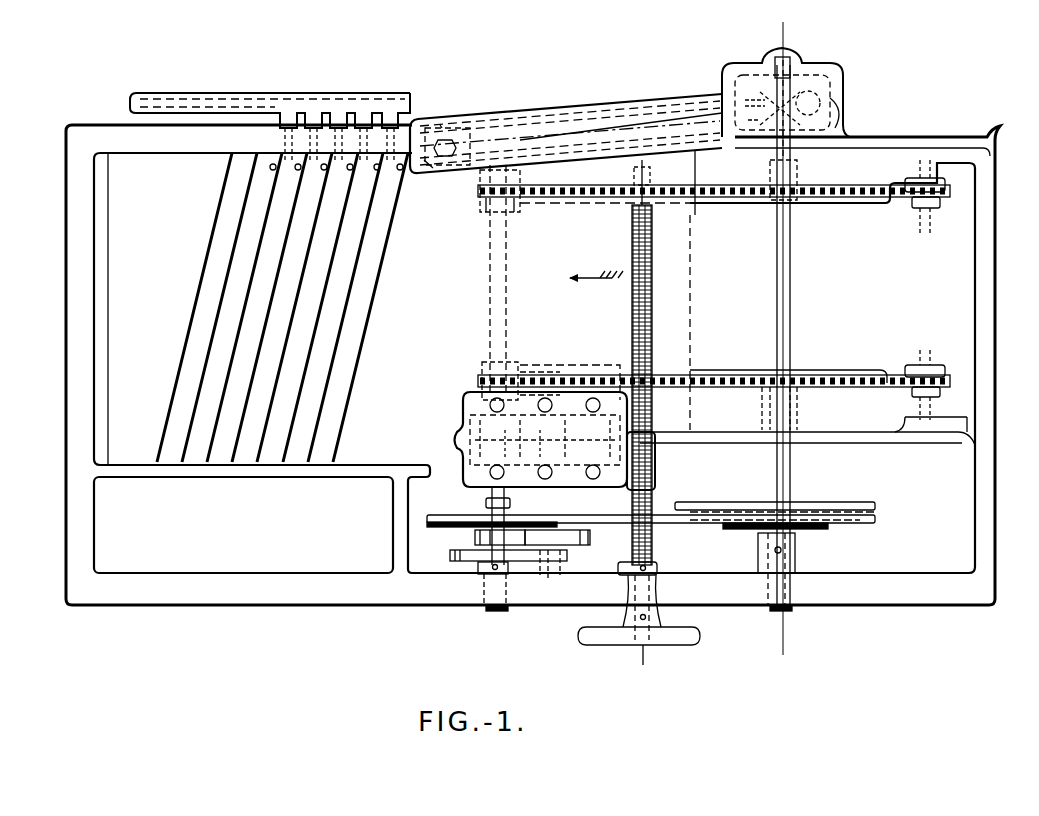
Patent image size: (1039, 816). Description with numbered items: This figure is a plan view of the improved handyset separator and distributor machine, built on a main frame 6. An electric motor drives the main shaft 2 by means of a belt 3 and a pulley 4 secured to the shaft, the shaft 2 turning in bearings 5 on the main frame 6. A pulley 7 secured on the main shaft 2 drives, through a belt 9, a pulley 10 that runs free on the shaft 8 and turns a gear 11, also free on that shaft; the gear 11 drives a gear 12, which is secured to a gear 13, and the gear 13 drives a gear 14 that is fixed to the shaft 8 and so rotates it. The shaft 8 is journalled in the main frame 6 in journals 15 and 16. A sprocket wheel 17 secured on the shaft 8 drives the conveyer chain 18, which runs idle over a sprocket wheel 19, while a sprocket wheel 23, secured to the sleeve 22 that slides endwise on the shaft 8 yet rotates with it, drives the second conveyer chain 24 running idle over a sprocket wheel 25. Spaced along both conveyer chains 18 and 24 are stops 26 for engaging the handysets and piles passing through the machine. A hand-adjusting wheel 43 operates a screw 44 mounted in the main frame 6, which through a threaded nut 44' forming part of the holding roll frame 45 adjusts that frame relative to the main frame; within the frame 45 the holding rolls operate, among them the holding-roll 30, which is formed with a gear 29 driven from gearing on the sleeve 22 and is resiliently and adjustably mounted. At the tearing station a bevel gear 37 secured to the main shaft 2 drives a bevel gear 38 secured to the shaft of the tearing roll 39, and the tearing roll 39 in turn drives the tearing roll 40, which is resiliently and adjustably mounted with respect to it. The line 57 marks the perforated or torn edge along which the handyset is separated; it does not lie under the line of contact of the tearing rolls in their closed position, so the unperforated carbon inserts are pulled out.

The main shaft 2 is at (791, 464).
The belt 3 is at (877, 506).
The pulley 4 is at (855, 520).
The bearings 5 is at (458, 75).
The main frame 6 is at (845, 90).
The pulley 7 is at (830, 530).
The shaft 8 is at (497, 305).
The belt 9 is at (405, 167).
The pulley 10 is at (435, 525).
The gear 11 is at (478, 537).
The gear 12 is at (585, 535).
The gear 13 is at (570, 556).
The gear 14 is at (452, 557).
The journal 15 is at (478, 582).
The journal 16 is at (510, 181).
The sprocket wheel 17 is at (482, 198).
The conveyer chain 18 is at (758, 185).
The sprocket wheel 19 is at (935, 205).
The sleeve 22 is at (490, 368).
The sprocket wheel 23 is at (506, 383).
The conveyer chain 24 is at (760, 387).
The sprocket wheel 25 is at (940, 378).
The stops 26 is at (703, 187).
The gear 29 is at (522, 447).
The holding-roll 30 is at (530, 398).
The bevel gear 37 is at (843, 124).
The bevel gear 38 is at (752, 100).
The tearing roll 39 is at (692, 290).
The tearing roll 40 is at (627, 118).
The hand-adjusting wheel 43 is at (650, 647).
The screw 44 is at (650, 400).
The threaded nut 44' is at (658, 461).
The holding roll frame 45 is at (458, 436).
The line of perforations or torn edge 57 is at (467, 153).